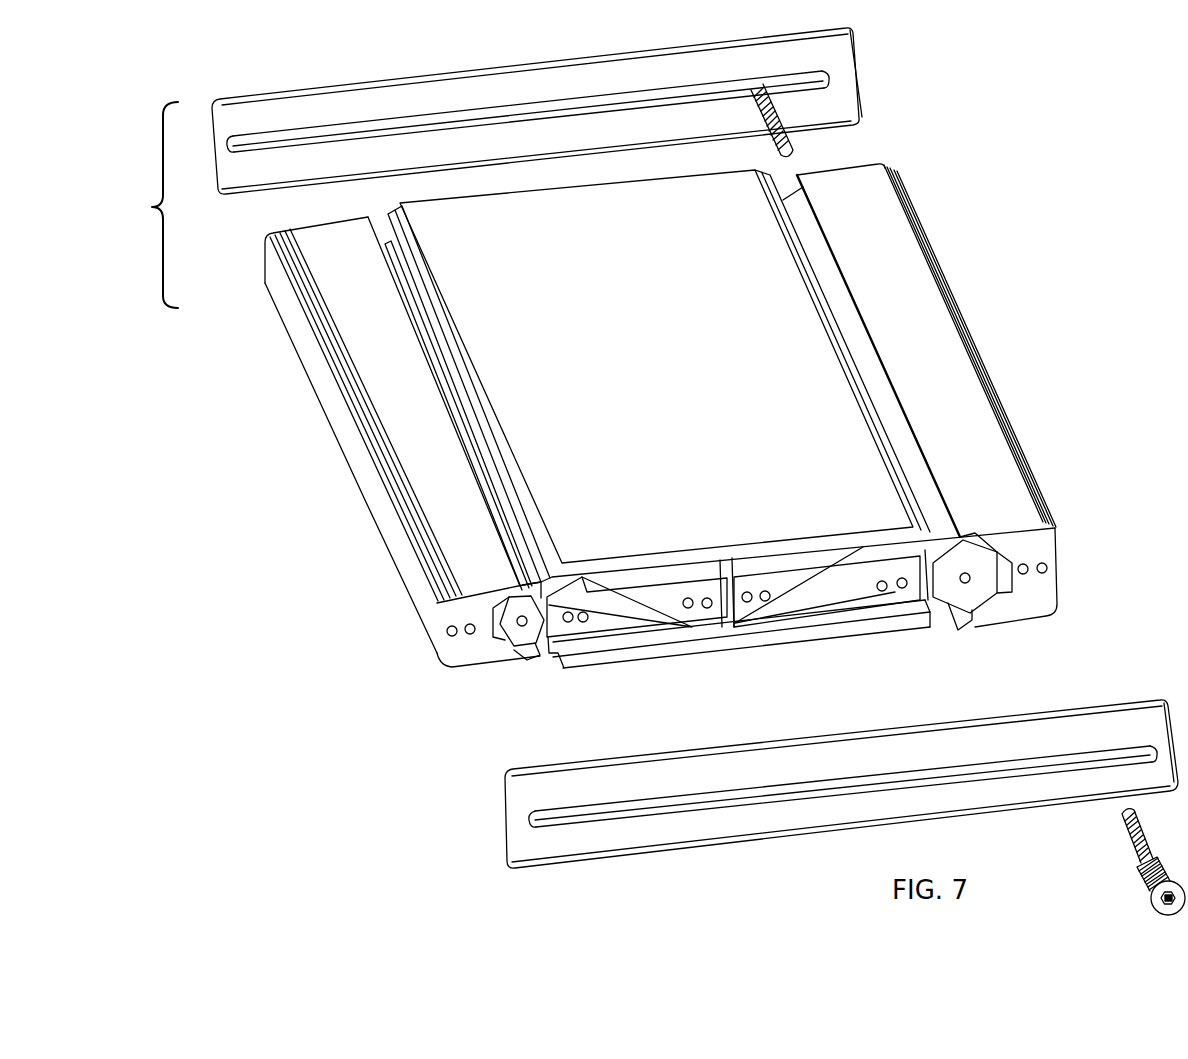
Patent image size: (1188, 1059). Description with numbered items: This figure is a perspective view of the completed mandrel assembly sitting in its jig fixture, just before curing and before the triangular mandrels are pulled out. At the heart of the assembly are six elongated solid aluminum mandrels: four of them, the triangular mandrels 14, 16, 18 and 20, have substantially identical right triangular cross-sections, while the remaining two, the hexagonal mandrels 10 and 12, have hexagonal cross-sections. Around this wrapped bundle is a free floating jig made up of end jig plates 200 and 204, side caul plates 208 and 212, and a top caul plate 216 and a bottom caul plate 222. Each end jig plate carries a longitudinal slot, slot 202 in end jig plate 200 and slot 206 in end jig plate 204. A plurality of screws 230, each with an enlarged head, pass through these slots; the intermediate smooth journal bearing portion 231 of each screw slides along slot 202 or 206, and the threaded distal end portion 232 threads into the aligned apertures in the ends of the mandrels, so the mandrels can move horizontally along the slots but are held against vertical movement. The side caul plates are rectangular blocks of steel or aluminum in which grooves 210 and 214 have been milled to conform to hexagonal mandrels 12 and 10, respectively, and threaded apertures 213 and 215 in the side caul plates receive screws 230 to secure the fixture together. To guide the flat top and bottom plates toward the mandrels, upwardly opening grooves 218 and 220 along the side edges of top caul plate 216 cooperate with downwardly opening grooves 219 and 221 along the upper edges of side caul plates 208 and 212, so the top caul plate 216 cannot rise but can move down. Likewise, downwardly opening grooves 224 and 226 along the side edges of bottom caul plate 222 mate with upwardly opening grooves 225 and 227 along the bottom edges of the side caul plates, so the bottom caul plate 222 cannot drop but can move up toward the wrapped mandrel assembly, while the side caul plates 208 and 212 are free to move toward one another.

The hexagonal mandrel 10 is at (960, 600).
The hexagonal mandrel 12 is at (512, 633).
The triangular mandrel 14 is at (827, 614).
The triangular mandrel 16 is at (785, 582).
The triangular mandrel 18 is at (662, 602).
The triangular mandrel 20 is at (640, 635).
The end jig plate 200 is at (841, 796).
The longitudinal slot 202 is at (810, 788).
The end jig plate 204 is at (537, 111).
The longitudinal slot 206 is at (443, 110).
The side caul plate 208 is at (357, 457).
The groove 210 is at (437, 603).
The side caul plate 212 is at (913, 315).
The threaded aperture 213 is at (1047, 565).
The groove 214 is at (1054, 553).
The threaded aperture 215 is at (1030, 567).
The top caul plate 216 is at (626, 385).
The upwardly opening groove 218 is at (437, 320).
The downwardly opening groove 219 is at (523, 587).
The upwardly opening groove 220 is at (803, 260).
The downwardly opening groove 221 is at (977, 532).
The bottom caul plate 222 is at (726, 666).
The downwardly opening groove 224 is at (563, 670).
The upwardly opening groove 225 is at (527, 658).
The downwardly opening groove 226 is at (928, 627).
The upwardly opening groove 227 is at (967, 628).
The screw 230 is at (1150, 897).
The smooth journal bearing portion 231 is at (1143, 875).
The threaded distal end portion 232 is at (793, 141).